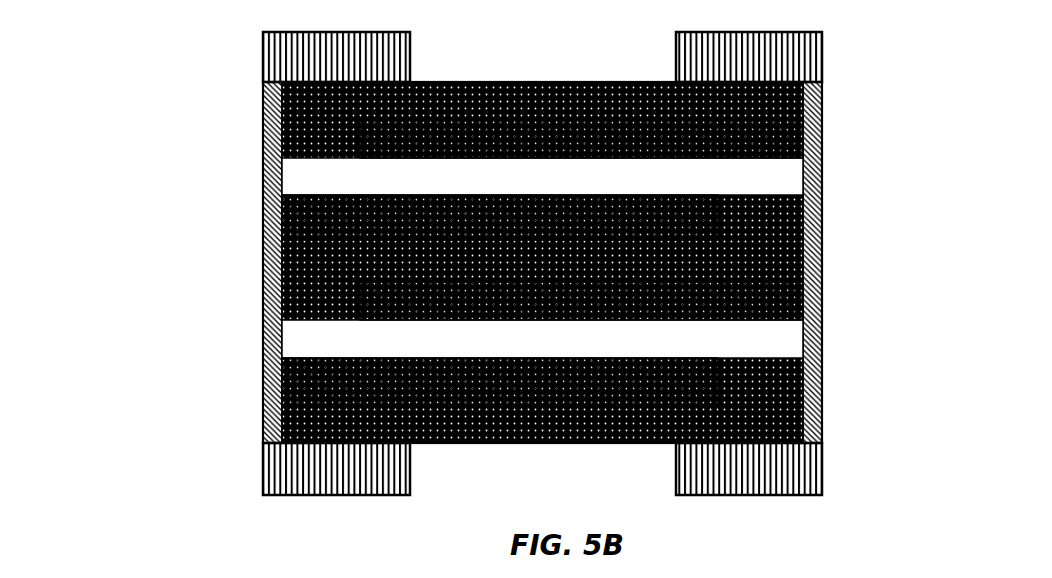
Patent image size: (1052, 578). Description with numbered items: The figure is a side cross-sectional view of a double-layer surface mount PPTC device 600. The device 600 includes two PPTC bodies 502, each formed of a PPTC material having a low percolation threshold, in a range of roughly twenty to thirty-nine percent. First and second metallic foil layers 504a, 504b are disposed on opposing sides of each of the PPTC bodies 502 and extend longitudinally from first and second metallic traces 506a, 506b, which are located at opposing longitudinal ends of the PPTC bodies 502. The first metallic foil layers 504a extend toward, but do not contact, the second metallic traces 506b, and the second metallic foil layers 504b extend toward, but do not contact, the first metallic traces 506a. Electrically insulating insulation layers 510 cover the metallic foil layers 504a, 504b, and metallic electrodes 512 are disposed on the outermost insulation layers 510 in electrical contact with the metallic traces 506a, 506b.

The double-layer surface mount PPTC device 600 is at (108, 130).
The metallic electrodes 512 is at (275, 58).
The insulation layers 510 is at (805, 97).
The first metallic traces 506a is at (270, 257).
The second metallic traces 506b is at (813, 245).
The first metallic foil layers 504a is at (295, 218).
The second metallic foil layers 504b is at (783, 133).
The PPTC bodies 502 is at (785, 180).